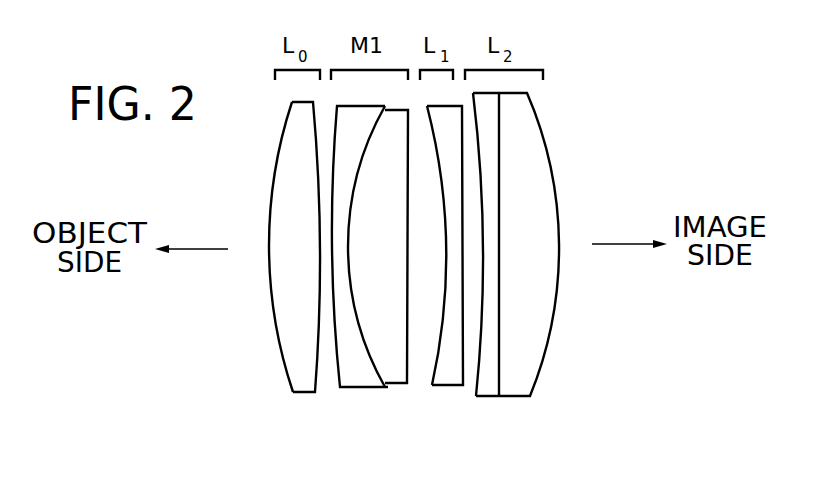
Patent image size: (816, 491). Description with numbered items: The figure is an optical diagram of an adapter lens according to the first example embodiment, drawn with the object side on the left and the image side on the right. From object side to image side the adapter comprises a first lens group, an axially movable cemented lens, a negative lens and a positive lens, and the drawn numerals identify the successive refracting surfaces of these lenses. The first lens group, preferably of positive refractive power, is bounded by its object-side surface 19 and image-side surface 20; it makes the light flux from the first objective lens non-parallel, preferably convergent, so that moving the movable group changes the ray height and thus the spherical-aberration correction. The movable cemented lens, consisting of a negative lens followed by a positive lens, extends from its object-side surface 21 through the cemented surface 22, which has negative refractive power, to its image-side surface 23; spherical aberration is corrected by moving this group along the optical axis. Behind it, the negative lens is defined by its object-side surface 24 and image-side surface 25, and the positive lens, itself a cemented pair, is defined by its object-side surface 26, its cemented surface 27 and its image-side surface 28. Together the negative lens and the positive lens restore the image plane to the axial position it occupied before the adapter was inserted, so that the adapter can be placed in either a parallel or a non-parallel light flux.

The object-side surface of lens L0 19 is at (290, 382).
The image-side surface of lens L0 20 is at (316, 390).
The object-side surface of cemented lens M1 21 is at (340, 375).
The cemented surface of lens M1 22 is at (379, 371).
The image-side surface of cemented lens M1 23 is at (408, 363).
The object-side surface of negative lens L1 24 is at (433, 372).
The image-side surface of negative lens L1 25 is at (463, 363).
The object-side surface of positive lens L2 26 is at (476, 382).
The cemented surface of lens L2 27 is at (500, 382).
The image-side surface of positive lens L2 28 is at (537, 379).